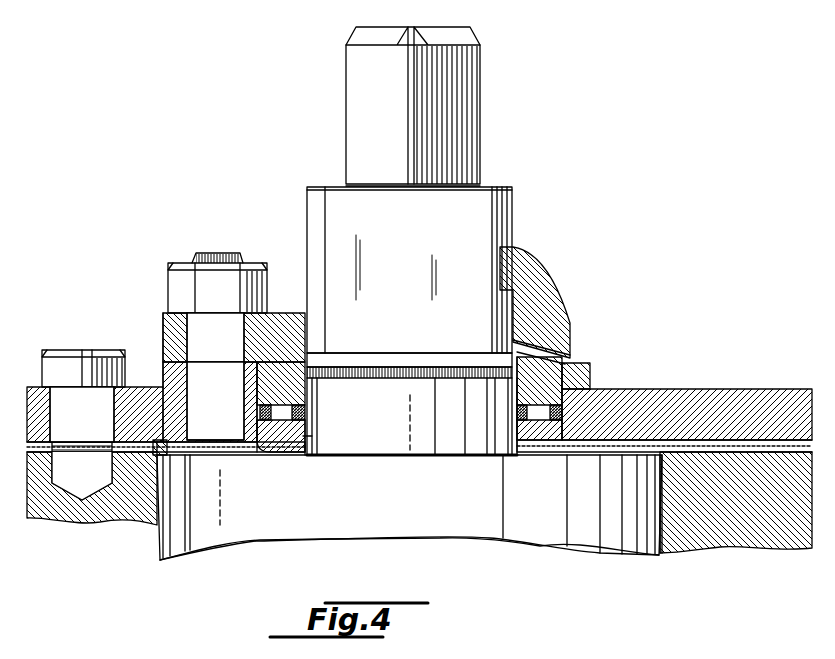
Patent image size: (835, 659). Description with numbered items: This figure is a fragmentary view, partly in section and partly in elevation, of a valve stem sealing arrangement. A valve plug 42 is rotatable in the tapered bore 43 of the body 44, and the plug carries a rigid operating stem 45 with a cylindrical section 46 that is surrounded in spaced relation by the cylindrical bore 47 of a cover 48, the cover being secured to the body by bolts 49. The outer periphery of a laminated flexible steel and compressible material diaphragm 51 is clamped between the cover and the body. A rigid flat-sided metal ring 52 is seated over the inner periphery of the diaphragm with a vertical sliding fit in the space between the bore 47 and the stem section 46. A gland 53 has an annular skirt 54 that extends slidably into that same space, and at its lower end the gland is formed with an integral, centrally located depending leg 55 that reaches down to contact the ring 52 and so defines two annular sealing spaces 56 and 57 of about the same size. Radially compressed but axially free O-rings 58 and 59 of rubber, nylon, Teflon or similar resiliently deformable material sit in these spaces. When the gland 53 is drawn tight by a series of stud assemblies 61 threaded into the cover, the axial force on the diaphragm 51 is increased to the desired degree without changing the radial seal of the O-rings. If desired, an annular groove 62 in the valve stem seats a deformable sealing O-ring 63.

The valve plug 42 is at (622, 560).
The tapered bore 43 is at (659, 503).
The body 44 is at (719, 533).
The operating stem 45 is at (487, 211).
The cylindrical section 46 is at (417, 407).
The cylindrical bore 47 is at (558, 387).
The cover 48 is at (720, 403).
The bolts 49 is at (95, 388).
The diaphragm 51 is at (606, 456).
The metal ring 52 is at (325, 439).
The gland 53 is at (277, 323).
The annular skirt 54 is at (294, 394).
The depending leg 55 is at (286, 451).
The annular sealing space 56 is at (249, 443).
The annular sealing space 57 is at (306, 422).
The O-ring 58 is at (563, 413).
The O-ring 59 is at (539, 398).
The stud assemblies 61 is at (214, 282).
The annular groove 62 is at (455, 367).
The sealing O-ring 63 is at (300, 371).